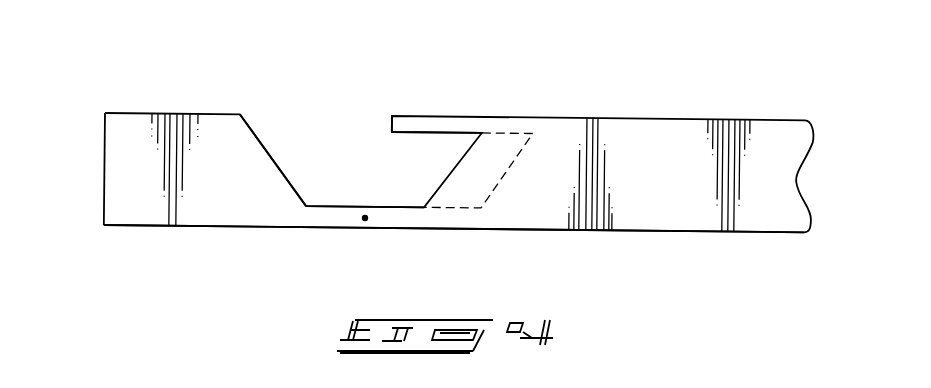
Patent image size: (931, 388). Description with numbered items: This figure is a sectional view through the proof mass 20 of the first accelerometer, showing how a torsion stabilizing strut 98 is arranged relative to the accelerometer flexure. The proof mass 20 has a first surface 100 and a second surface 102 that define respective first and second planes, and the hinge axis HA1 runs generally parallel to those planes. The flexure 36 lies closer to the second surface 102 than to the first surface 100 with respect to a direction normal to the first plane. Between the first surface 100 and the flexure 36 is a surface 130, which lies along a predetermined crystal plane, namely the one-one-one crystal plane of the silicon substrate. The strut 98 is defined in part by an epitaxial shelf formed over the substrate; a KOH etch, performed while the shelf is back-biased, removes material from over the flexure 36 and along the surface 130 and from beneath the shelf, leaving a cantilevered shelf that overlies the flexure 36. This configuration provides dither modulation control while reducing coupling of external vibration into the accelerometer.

The proof mass 20 is at (717, 75).
The flexure 36 is at (330, 204).
The torsion stabilizing strut 98 is at (430, 117).
The first surface 100 is at (137, 112).
The second surface 102 is at (672, 233).
The surface 130 is at (255, 130).
The hinge axis HA1 is at (365, 221).